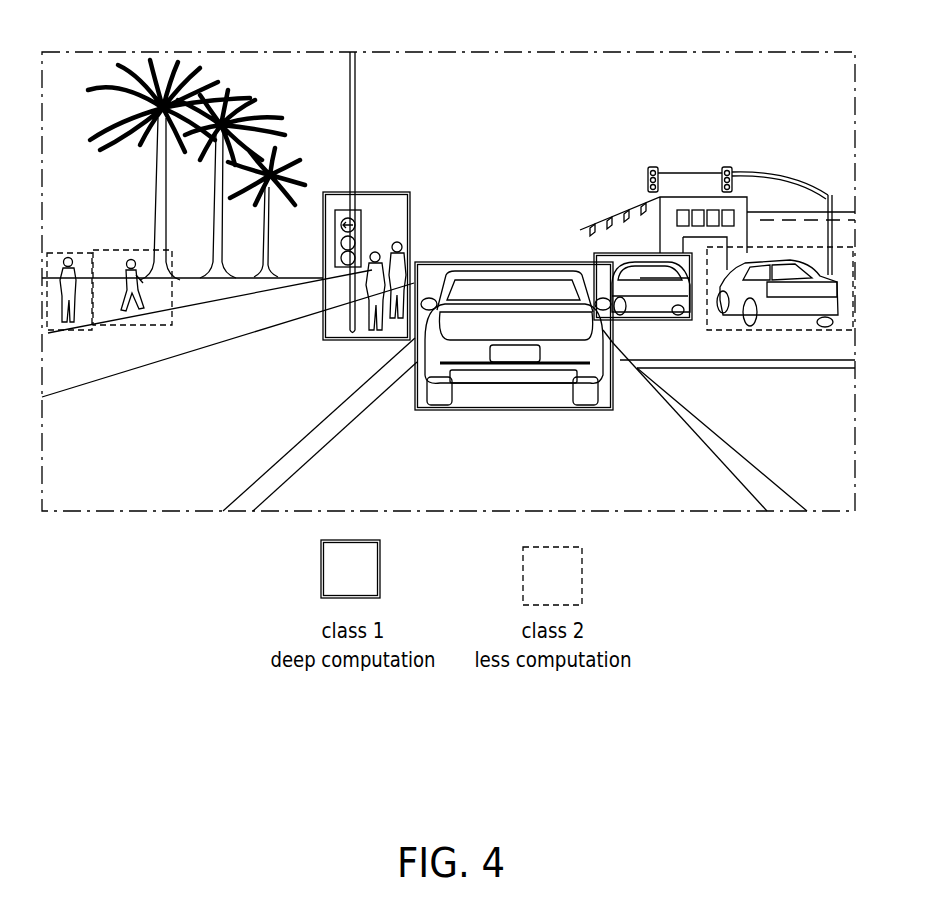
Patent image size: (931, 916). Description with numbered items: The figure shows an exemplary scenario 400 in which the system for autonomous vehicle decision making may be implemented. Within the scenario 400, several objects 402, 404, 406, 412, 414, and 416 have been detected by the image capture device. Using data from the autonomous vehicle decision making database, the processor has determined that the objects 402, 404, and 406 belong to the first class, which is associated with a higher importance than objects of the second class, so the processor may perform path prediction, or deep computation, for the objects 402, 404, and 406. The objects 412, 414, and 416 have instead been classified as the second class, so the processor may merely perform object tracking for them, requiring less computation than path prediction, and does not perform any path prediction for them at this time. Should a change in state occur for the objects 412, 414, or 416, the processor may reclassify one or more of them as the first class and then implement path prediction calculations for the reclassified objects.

The exemplary scenario 400 is at (215, 52).
The object 402 is at (372, 192).
The object 404 is at (467, 262).
The object 406 is at (623, 253).
The object 412 is at (64, 253).
The object 414 is at (172, 268).
The object 416 is at (760, 247).